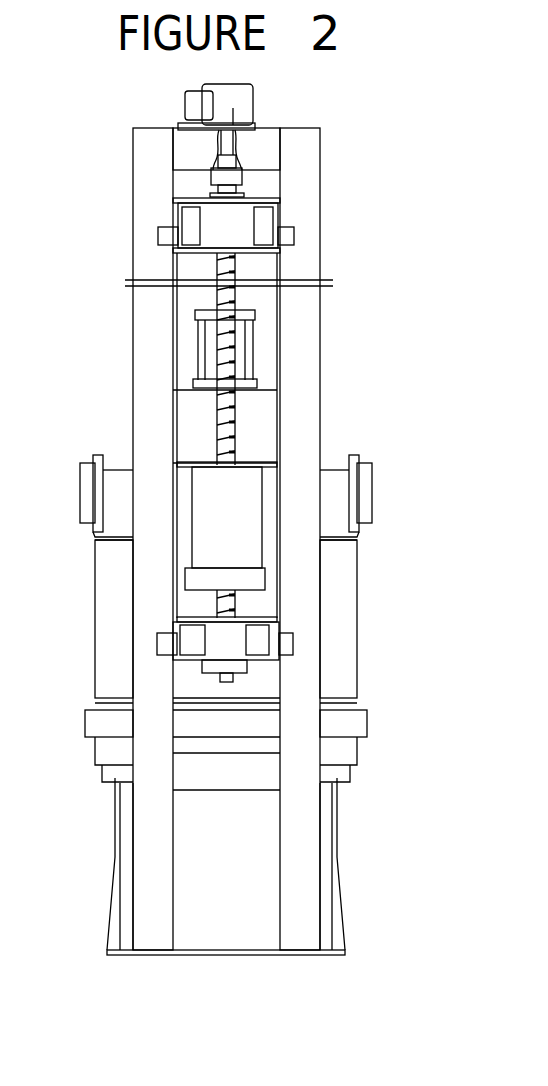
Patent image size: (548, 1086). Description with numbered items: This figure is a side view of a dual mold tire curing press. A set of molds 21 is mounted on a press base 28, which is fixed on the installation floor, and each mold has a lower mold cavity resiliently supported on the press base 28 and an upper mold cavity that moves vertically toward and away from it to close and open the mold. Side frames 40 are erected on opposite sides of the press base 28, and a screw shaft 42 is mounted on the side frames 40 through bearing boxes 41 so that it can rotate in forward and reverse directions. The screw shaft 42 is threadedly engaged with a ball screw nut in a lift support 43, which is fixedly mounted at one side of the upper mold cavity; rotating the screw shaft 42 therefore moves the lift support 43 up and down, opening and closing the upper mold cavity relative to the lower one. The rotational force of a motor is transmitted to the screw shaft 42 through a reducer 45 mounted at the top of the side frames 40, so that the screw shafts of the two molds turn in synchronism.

The reducer 45 is at (243, 105).
The bearing box 41 is at (243, 232).
The screw shaft 42 is at (233, 332).
The side frame 40 is at (280, 380).
The lift support 43 is at (242, 490).
The mold 21 is at (97, 613).
The press base 28 is at (337, 818).